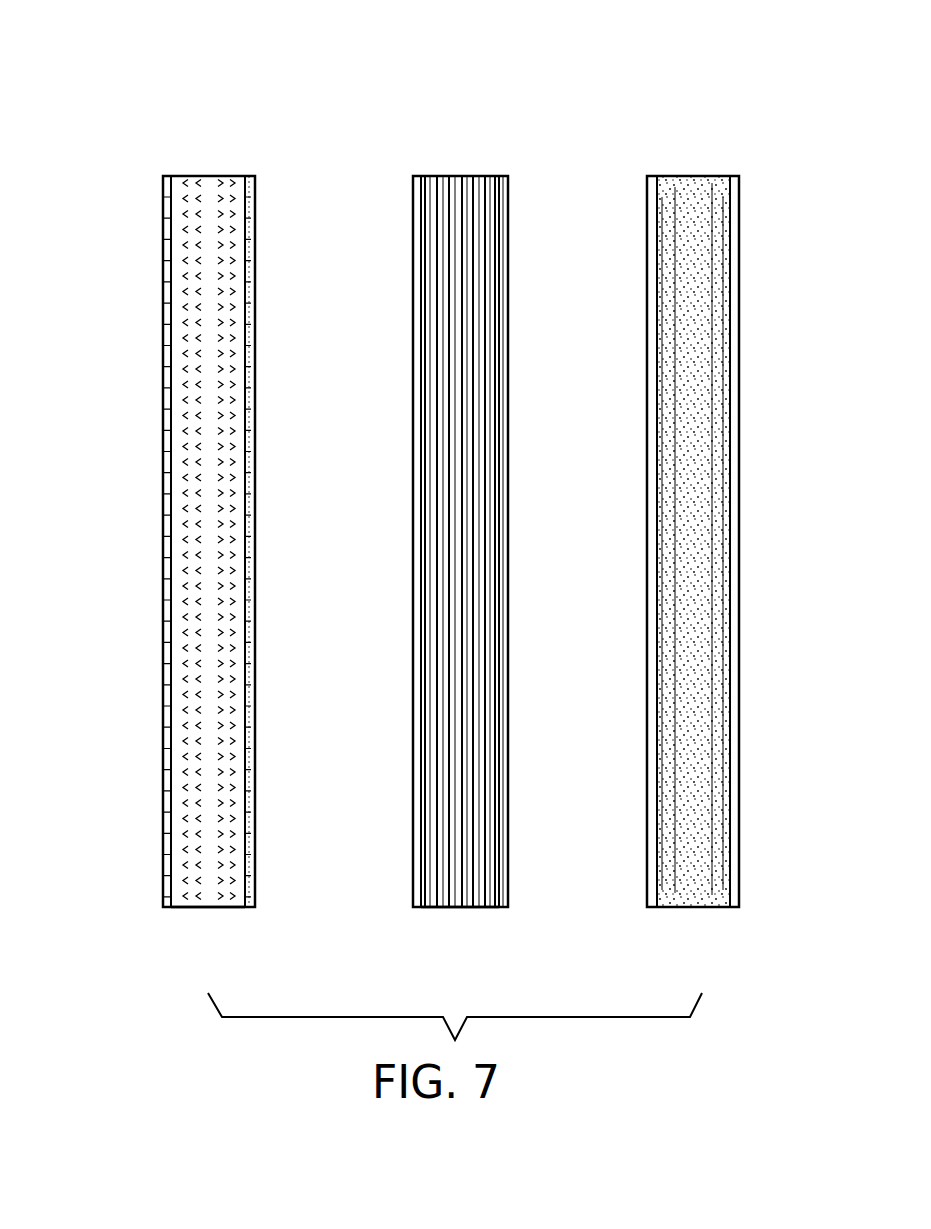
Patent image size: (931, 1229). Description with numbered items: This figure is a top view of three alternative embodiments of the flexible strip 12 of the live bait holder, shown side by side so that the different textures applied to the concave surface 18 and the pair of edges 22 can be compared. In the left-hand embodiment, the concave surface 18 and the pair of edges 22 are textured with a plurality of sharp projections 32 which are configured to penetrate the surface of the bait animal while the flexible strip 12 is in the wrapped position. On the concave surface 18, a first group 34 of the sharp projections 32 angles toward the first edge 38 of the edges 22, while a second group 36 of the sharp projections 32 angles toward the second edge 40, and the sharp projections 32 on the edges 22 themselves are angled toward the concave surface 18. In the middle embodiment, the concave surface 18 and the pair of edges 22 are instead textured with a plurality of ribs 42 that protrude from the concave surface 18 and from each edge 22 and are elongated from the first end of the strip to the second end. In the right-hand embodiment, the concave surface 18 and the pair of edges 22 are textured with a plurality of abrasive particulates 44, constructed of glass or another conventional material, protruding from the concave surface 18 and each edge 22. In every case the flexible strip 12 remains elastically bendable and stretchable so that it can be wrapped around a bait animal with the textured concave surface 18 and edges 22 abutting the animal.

The flexible strip 12 is at (205, 130).
The pair of edges 22 is at (163, 193).
The concave surface 18 is at (210, 372).
The sharp projections 32 is at (177, 278).
The first group of sharp projections 34 is at (192, 928).
The second group of sharp projections 36 is at (220, 928).
The first edge 38 is at (163, 880).
The second edge 40 is at (258, 860).
The ribs 42 is at (440, 907).
The abrasive particulates 44 is at (696, 926).